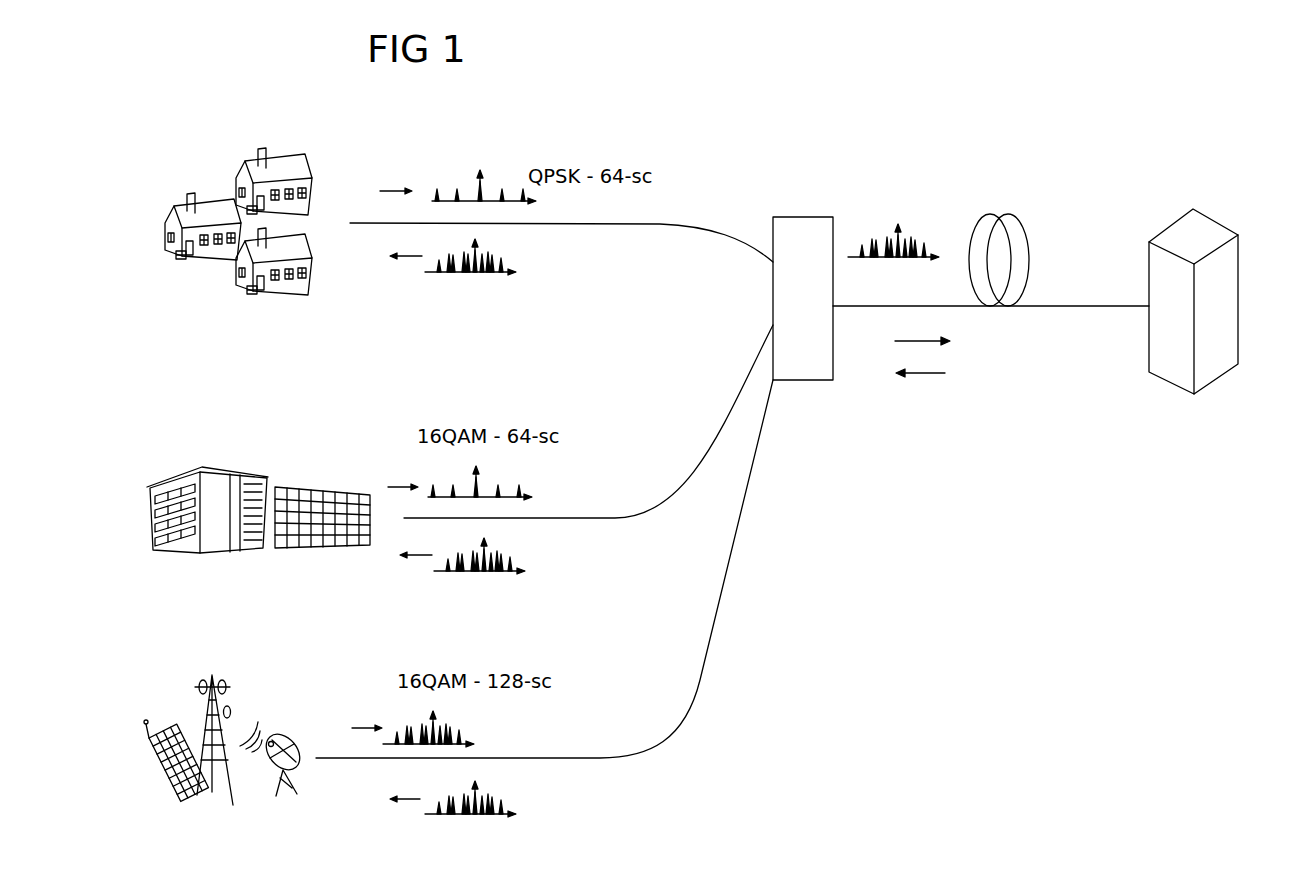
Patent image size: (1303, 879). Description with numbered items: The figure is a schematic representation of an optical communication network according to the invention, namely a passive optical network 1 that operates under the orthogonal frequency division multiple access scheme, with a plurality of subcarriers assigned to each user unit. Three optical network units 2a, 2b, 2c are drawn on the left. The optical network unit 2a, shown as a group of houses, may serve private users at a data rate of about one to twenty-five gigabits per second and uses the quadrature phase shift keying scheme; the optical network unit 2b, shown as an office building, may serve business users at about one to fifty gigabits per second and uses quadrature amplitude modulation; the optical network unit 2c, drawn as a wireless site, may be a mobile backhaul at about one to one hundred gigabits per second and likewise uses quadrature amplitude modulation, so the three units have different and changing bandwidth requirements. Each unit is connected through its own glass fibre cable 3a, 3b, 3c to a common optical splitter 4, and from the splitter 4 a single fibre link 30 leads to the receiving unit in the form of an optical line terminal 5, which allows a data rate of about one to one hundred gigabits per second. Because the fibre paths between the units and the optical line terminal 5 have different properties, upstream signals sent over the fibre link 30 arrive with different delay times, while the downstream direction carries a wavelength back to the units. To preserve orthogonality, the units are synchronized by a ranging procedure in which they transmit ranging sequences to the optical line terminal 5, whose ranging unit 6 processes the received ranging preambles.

The passive optical network 1 is at (925, 178).
The optical network unit 2a is at (218, 142).
The optical network unit 2b is at (168, 420).
The optical network unit 2c is at (145, 637).
The glass fibre cable 3a is at (688, 227).
The glass fibre cable 3b is at (638, 508).
The glass fibre cable 3c is at (697, 693).
The optical splitter 4 is at (808, 368).
The optical line terminal 5 is at (1218, 200).
The ranging unit 6 is at (1177, 370).
The fibre link 30 is at (1028, 205).